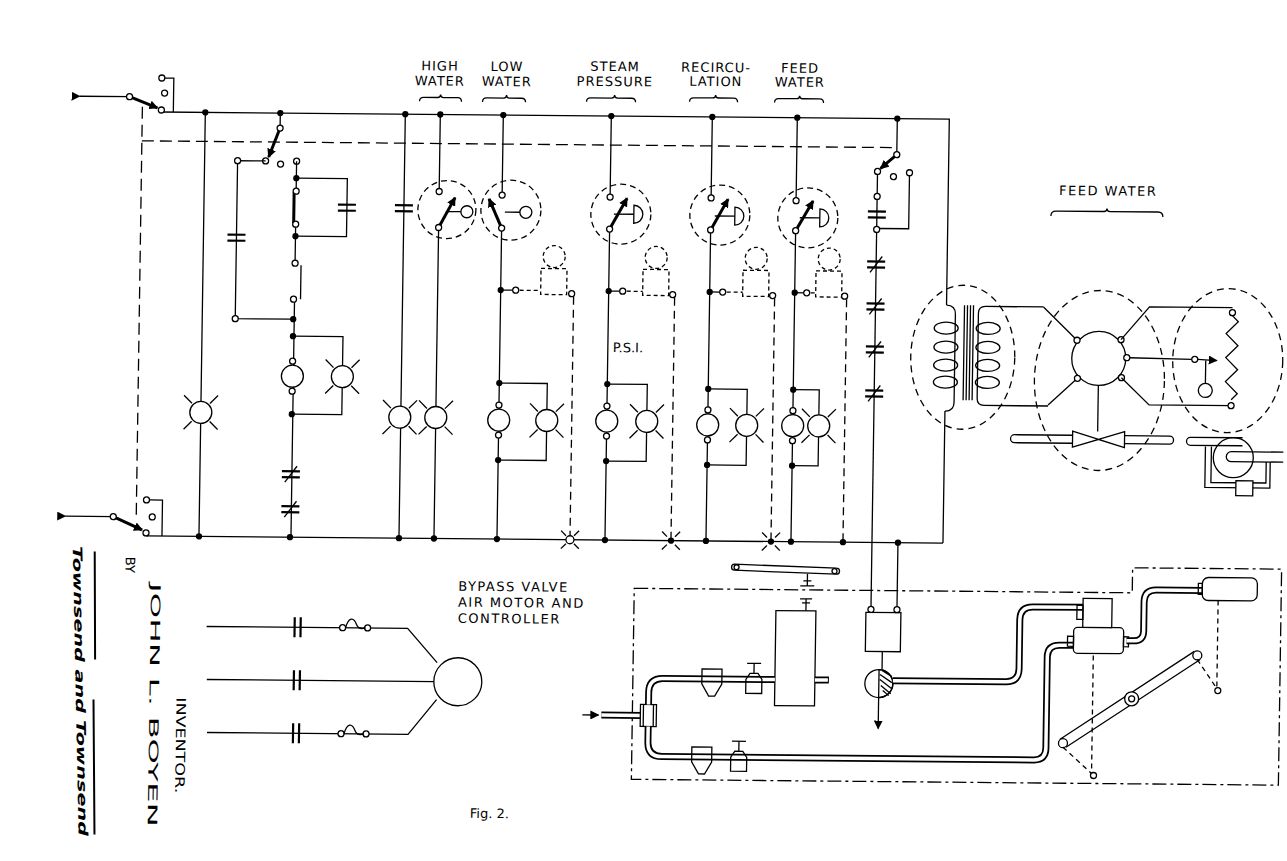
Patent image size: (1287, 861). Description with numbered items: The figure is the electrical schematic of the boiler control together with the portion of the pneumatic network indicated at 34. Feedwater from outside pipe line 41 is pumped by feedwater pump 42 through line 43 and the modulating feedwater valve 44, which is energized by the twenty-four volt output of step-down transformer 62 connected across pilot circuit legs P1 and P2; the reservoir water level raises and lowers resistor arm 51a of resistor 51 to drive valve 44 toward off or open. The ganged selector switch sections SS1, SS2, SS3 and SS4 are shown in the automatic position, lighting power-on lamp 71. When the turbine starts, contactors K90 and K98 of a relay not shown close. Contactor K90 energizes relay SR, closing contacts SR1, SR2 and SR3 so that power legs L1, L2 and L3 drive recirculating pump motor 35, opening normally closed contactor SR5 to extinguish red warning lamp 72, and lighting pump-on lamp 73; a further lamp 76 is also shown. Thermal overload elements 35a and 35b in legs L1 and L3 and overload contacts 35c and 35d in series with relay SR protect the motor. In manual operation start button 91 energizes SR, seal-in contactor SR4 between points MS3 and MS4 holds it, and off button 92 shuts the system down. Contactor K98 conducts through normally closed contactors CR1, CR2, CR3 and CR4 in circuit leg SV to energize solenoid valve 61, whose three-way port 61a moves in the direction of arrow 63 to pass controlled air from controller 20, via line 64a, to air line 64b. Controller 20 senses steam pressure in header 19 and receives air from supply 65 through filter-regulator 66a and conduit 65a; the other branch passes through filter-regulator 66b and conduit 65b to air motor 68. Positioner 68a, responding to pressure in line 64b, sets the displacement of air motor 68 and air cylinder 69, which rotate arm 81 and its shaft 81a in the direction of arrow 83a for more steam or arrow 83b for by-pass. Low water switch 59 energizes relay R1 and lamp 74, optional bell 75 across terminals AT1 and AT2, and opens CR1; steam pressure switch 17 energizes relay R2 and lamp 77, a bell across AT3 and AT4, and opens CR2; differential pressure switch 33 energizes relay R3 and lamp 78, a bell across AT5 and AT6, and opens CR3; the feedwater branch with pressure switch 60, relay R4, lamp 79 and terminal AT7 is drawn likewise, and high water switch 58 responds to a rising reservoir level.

The steam pressure safety switch 17 is at (620, 195).
The differential pressure switch 33 is at (719, 195).
The high water switch 58 is at (444, 194).
The low water switch 59 is at (511, 194).
The water pressure sensitive switch 60 is at (804, 195).
The alarm bell 75 is at (566, 244).
The power on lamp 71 is at (200, 425).
The recirculating pump red warning lamp 72 is at (399, 428).
The recirculating pump on light 73 is at (354, 366).
The low water level warning light 74 is at (549, 429).
The indicator lamp 76 is at (443, 427).
The warning red light 77 is at (649, 429).
The red warning lamp 78 is at (749, 432).
The indicator lamp 79 is at (820, 432).
The pump start button 91 is at (290, 207).
The off button 92 is at (296, 288).
The recirculating pump motor 35 is at (455, 659).
The thermal overload element 35a is at (368, 622).
The thermal overload element 35b is at (368, 727).
The normally closed overload relay contact 35c is at (300, 476).
The normally closed overload relay contact 35d is at (301, 509).
The step-down transformer 62 is at (974, 288).
The feedwater modulating valve 44 is at (1126, 288).
The controller 51 is at (1248, 290).
The resistor arm 51a is at (1173, 369).
The feedwater line 43 is at (1040, 438).
The feedwater pump 42 is at (1250, 432).
The outside source pipe line 41 is at (1254, 447).
The main header 19 is at (772, 575).
The proportioning controller 20 is at (779, 609).
The bypass valve air motor and controller 34 is at (972, 585).
The controller solenoid valve 61 is at (907, 623).
The three-way valve port 61a is at (903, 700).
The arrow 63 is at (889, 667).
The air line 64a is at (830, 668).
The air line 64b is at (976, 678).
The air supply 65 is at (624, 707).
The conduit 65a is at (762, 688).
The conduit 65b is at (796, 752).
The air filter and regulator 66a is at (714, 665).
The air filter and regulator 66b is at (716, 743).
The by-pass valve air motor 68 is at (1119, 632).
The positioner 68a is at (1114, 605).
The air cylinder 69 is at (1230, 591).
The arm 81 is at (1170, 668).
The shaft 81a is at (1146, 694).
The arrow 83a is at (1176, 687).
The arrow 83b is at (1141, 652).
The selector switch section SS1 is at (117, 510).
The selector switch section SS2 is at (125, 93).
The selector switch section SS3 is at (287, 138).
The selector switch section SS4 is at (904, 146).
The pilot circuit leg P1 is at (96, 103).
The pilot circuit leg P2 is at (92, 521).
The contactor K9D K90 is at (244, 242).
The contactor K9B K98 is at (867, 209).
The motor starter contact MS3 is at (306, 179).
The motor starter contact MS4 is at (307, 237).
The relay SR is at (290, 362).
The normally open contact SR1 is at (309, 620).
The normally open contact SR2 is at (309, 673).
The normally open contact SR3 is at (309, 727).
The normally open seal-in contactor SR4 is at (350, 205).
The normally closed contactor SR5 is at (400, 211).
The relay R1 is at (517, 421).
The relay R2 is at (621, 422).
The relay R3 is at (721, 426).
The relay coil R4 is at (800, 427).
The alarm terminal AT1 is at (502, 290).
The alarm terminal AT2 is at (571, 535).
The alarm terminal AT3 is at (612, 290).
The alarm terminal AT4 is at (671, 535).
The alarm terminal AT5 is at (713, 290).
The alarm terminal AT6 is at (771, 535).
The thermostat contact AT7 is at (798, 290).
The normally closed contactor CR1 is at (884, 392).
The normally closed contactor CR2 is at (884, 348).
The normally closed contactor CR3 is at (884, 306).
The normally closed contactor CR4 is at (885, 263).
The circuit leg SV is at (880, 237).
The power circuit leg L1 is at (233, 624).
The power circuit leg L2 is at (233, 677).
The power circuit leg L3 is at (233, 730).